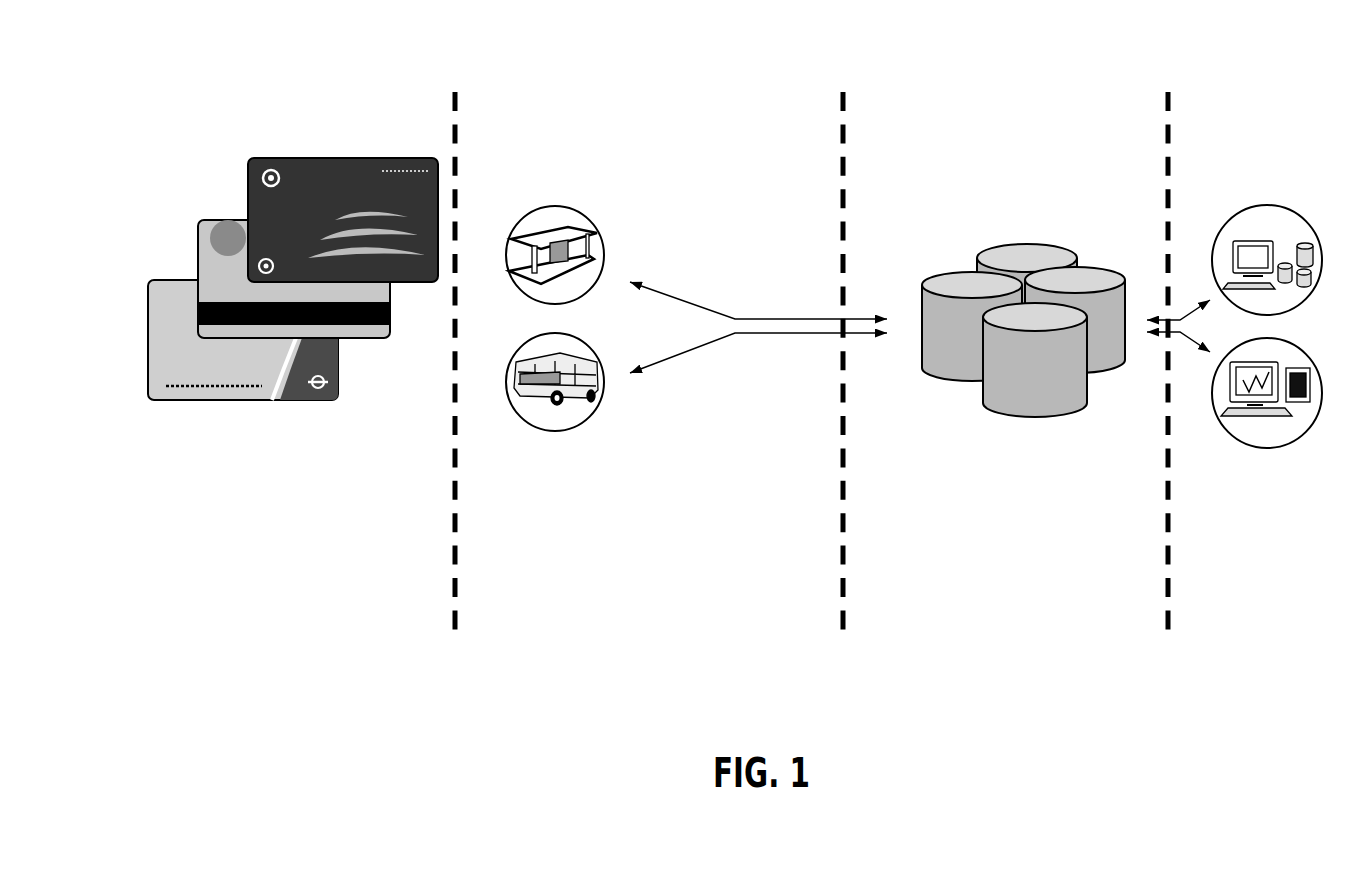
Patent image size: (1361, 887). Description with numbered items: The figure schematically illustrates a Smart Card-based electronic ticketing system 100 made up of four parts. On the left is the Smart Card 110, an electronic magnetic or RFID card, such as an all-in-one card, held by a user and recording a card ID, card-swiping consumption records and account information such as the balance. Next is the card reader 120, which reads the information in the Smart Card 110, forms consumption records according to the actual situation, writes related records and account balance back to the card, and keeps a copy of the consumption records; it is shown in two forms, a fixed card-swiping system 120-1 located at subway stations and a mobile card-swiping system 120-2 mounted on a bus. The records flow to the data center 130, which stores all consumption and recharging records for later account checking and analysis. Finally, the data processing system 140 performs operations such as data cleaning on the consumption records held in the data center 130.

The system 100 is at (858, 45).
The Smart Card 110 is at (293, 350).
The card reader 120 is at (696, 372).
The fixed card-swiping system 120-1 is at (605, 243).
The mobile card-swiping system 120-2 is at (602, 407).
The data center 130 is at (1023, 393).
The data processing system 140 is at (1234, 373).